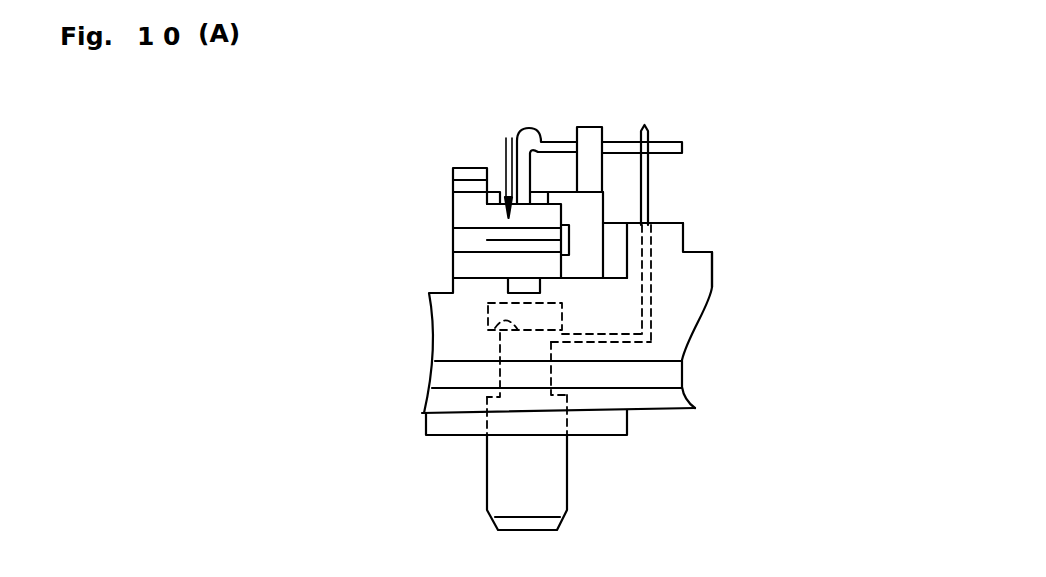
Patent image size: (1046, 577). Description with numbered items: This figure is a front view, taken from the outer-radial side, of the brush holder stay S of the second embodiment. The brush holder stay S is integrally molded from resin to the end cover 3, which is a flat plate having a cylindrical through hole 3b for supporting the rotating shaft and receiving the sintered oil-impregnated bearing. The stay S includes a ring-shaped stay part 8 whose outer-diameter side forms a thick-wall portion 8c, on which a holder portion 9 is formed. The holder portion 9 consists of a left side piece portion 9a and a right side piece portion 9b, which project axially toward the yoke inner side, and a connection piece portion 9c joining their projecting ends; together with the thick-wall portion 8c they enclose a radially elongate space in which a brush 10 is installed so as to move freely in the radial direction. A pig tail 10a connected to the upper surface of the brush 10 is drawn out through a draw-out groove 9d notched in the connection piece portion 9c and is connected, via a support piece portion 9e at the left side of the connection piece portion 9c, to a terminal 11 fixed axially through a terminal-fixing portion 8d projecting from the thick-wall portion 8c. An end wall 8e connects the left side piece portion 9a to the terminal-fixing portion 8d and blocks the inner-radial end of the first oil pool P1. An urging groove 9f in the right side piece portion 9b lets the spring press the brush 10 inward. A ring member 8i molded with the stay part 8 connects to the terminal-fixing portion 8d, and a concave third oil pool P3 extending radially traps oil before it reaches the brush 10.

The brush holder stay S is at (760, 118).
The stay part 8 is at (722, 303).
The thick-wall portion 8c is at (443, 304).
The terminal-fixing portion 8d is at (673, 240).
The end wall 8e is at (612, 267).
The ring member 8i is at (673, 397).
The end cover 3 is at (627, 376).
The through hole 3b is at (592, 422).
The third oil pool P3 is at (490, 318).
The first oil pool P1 is at (615, 212).
The terminal 11 is at (647, 172).
The holder portion 9 is at (416, 155).
The left side piece portion 9a is at (590, 250).
The right side piece portion 9b is at (473, 218).
The connection piece portion 9c is at (512, 138).
The draw-out groove 9d is at (503, 192).
The support piece portion 9e is at (593, 128).
The urging groove 9f is at (473, 250).
The brush 10 is at (506, 138).
The pig tail 10a is at (534, 136).